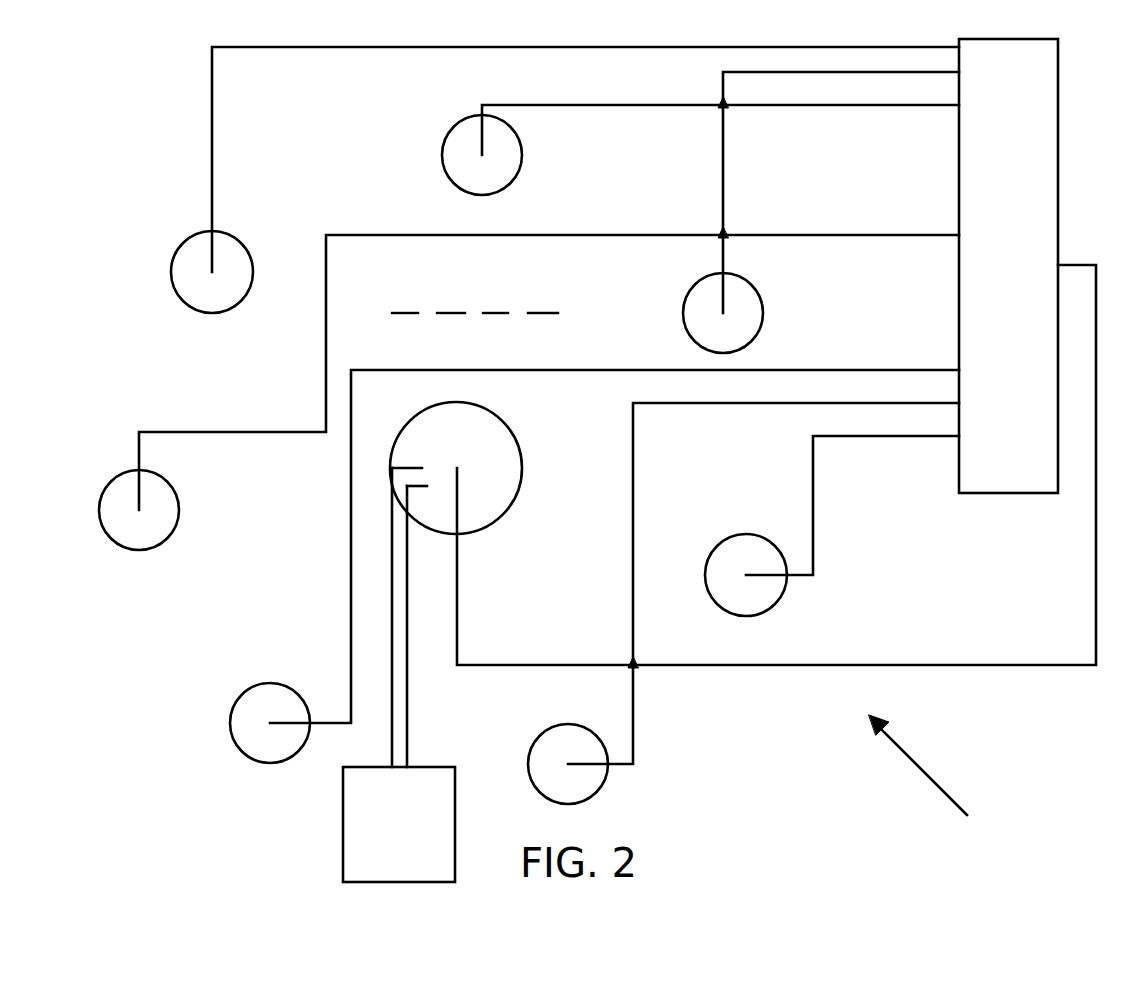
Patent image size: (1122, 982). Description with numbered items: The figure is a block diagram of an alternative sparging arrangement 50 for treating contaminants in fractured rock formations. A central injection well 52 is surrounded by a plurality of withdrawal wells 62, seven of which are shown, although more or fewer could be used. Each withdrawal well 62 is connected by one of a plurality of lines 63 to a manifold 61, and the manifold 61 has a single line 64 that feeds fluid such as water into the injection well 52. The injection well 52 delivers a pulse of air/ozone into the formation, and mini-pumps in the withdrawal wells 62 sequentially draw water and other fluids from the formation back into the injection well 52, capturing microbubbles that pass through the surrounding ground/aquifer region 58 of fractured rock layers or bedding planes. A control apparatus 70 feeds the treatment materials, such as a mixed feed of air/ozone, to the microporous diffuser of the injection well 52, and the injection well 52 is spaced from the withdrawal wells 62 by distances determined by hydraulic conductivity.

The sparging arrangement 50 is at (936, 780).
The injection well 52 is at (515, 503).
The surrounding ground/aquifer region 58 is at (475, 299).
The manifold 61 is at (1025, 493).
The withdrawal wells 62 is at (242, 242).
The lines 63 is at (442, 46).
The single line 64 is at (990, 664).
The control apparatus 70 is at (399, 675).